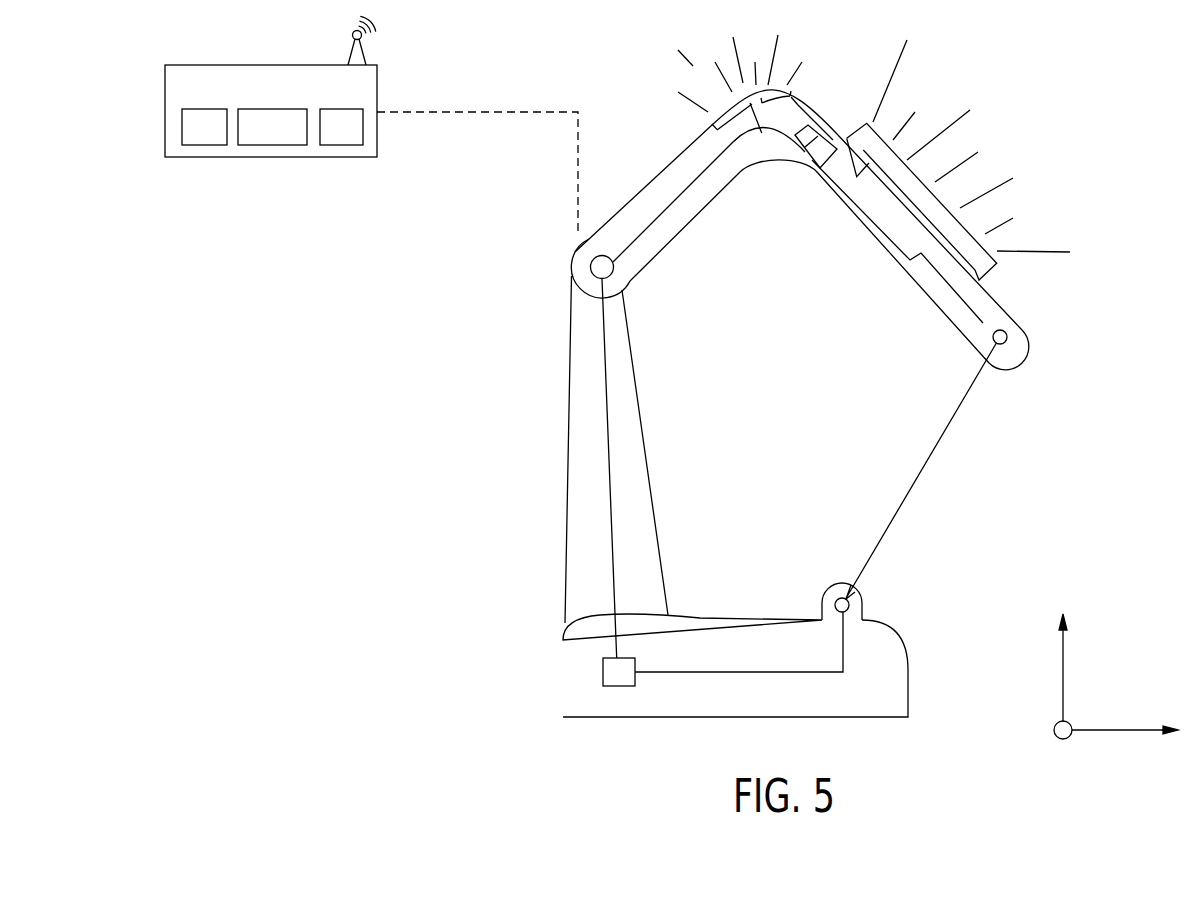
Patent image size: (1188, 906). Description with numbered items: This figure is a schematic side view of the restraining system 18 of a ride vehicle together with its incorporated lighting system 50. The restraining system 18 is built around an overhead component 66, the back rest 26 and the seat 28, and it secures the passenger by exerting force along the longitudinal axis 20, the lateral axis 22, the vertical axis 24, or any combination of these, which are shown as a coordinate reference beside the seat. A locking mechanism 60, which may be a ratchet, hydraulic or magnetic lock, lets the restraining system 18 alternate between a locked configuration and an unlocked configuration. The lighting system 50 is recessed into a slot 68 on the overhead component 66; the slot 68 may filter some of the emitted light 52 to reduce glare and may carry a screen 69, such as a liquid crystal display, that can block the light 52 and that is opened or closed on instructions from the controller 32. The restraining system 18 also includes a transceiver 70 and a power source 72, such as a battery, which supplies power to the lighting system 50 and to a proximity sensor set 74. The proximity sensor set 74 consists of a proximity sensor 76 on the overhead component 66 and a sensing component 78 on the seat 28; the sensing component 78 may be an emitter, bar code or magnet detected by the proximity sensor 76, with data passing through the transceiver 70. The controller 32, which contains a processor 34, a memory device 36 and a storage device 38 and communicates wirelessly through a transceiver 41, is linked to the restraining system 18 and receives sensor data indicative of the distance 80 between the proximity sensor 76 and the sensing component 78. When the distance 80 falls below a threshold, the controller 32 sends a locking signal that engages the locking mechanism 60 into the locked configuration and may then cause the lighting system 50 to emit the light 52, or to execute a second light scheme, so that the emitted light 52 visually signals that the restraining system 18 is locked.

The restraining system 18 is at (892, 117).
The longitudinal axis 20 is at (1113, 732).
The lateral axis 22 is at (1056, 738).
The vertical axis 24 is at (1062, 668).
The back rest 26 is at (568, 447).
The seat 28 is at (695, 718).
The controller 32 is at (270, 65).
The processor 34 is at (205, 147).
The memory device 36 is at (274, 147).
The storage device 38 is at (343, 147).
The transceiver 41 is at (364, 53).
The lighting system 50 is at (793, 96).
The emitted light 52 is at (692, 66).
The locking mechanism 60 is at (590, 262).
The overhead component 66 is at (677, 172).
The slot 68 is at (987, 270).
The screen 69 is at (995, 238).
The transceiver 70 is at (603, 668).
The power source 72 is at (800, 166).
The proximity sensor set 74 is at (993, 341).
The proximity sensor 76 is at (1015, 364).
The sensing component 78 is at (836, 592).
The distance 80 is at (922, 472).